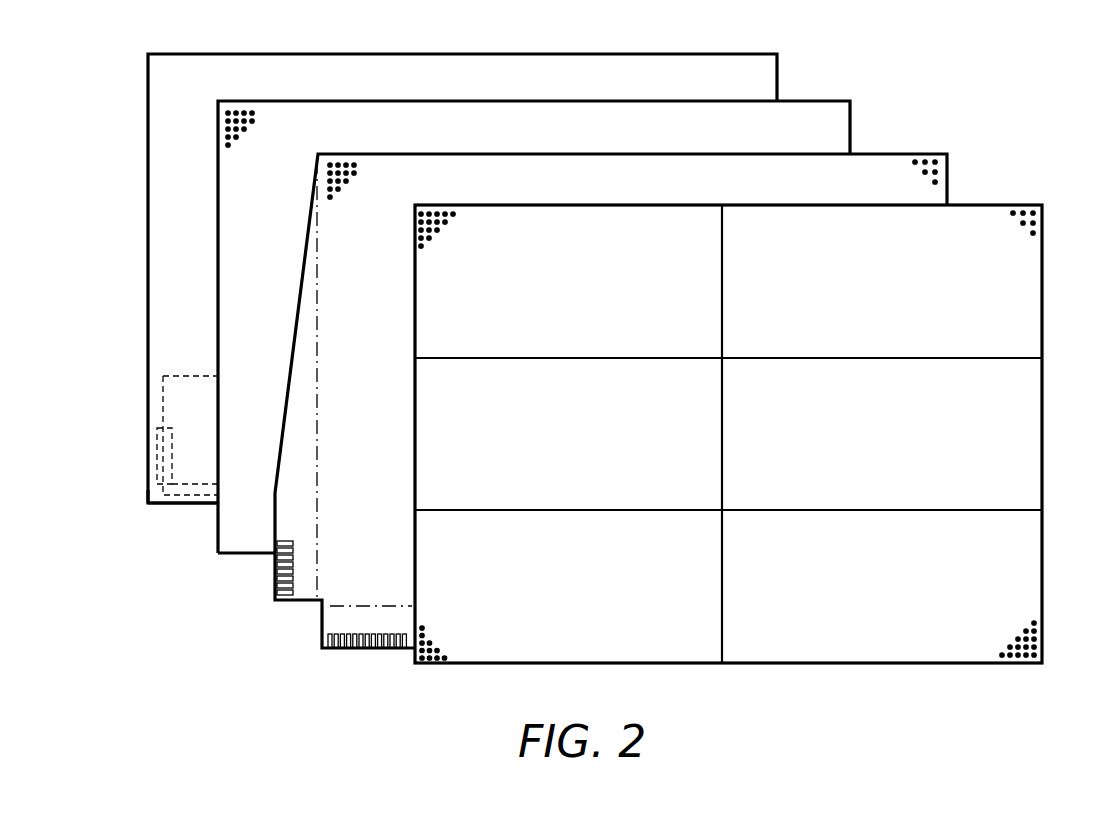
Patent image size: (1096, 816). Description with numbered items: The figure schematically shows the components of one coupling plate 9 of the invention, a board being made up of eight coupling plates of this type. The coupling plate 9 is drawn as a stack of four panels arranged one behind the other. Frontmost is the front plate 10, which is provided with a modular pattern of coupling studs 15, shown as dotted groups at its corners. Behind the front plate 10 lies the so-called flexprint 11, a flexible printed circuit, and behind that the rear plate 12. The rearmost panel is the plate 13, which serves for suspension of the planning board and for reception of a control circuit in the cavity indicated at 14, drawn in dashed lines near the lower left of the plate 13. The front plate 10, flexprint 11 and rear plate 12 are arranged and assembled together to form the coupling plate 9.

The coupling plate 9 is at (136, 376).
The front plate 10 is at (982, 218).
The flexprint 11 is at (893, 165).
The rear plate 12 is at (818, 112).
The plate for suspension 13 is at (748, 60).
The cavity 14 is at (178, 460).
The coupling studs 15 is at (1024, 228).